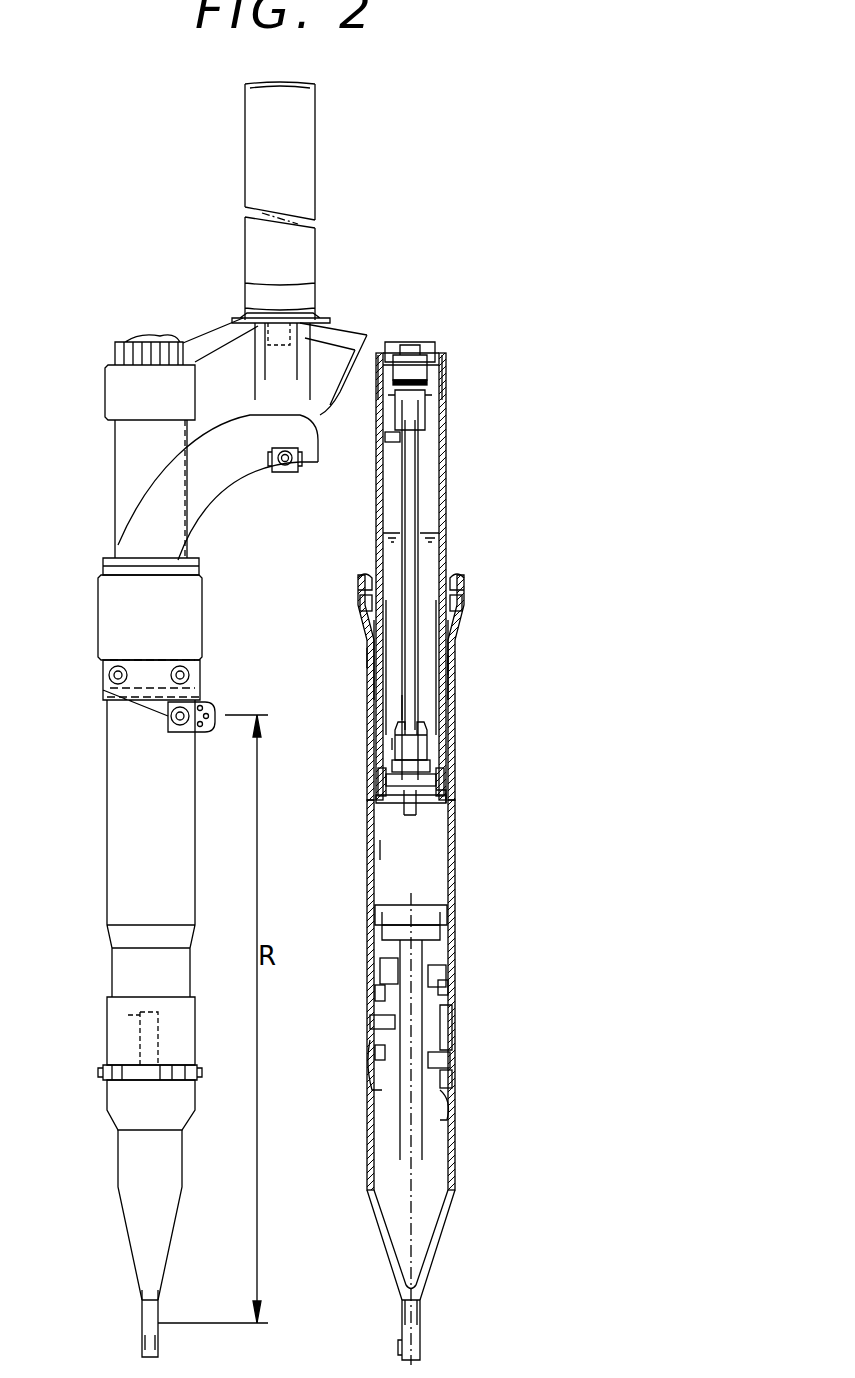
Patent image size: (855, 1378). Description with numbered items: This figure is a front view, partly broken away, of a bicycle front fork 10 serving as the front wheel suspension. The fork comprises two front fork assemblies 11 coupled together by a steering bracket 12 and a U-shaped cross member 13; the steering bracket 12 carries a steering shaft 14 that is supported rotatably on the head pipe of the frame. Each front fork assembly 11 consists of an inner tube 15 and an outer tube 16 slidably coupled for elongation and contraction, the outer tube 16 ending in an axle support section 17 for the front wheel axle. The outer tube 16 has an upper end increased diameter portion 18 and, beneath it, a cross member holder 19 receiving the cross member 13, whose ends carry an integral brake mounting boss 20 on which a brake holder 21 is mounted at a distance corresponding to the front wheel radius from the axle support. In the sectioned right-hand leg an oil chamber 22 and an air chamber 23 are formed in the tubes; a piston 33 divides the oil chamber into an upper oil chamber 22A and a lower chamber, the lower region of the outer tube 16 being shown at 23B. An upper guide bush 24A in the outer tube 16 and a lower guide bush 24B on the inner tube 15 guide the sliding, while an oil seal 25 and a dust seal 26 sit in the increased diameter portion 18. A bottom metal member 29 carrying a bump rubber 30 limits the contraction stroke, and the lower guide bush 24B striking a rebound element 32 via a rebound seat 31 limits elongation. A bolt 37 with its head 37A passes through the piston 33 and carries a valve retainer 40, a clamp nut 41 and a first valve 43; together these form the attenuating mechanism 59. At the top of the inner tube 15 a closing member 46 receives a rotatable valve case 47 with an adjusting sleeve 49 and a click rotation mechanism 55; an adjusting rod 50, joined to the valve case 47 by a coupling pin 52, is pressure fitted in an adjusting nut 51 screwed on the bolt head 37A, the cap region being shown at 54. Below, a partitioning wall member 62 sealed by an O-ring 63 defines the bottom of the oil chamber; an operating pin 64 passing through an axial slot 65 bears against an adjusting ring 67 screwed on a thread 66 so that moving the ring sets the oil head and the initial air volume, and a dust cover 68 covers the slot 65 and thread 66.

The front fork 10 is at (462, 257).
The front fork assembly 11 is at (117, 470).
The steering bracket 12 is at (198, 343).
The cross member 13 is at (262, 470).
The steering shaft 14 is at (310, 150).
The inner tube 15 is at (120, 508).
The outer tube 16 is at (107, 843).
The axle support section 17 is at (158, 1316).
The increased diameter portion 18 is at (100, 603).
The cross member holder 19 is at (110, 690).
The brake mounting boss 20 is at (178, 735).
The brake holder 21 is at (198, 693).
The oil chamber 22 is at (420, 712).
The upper oil chamber 22A is at (388, 687).
The air chamber 23 is at (430, 478).
The lower chamber 23B is at (378, 853).
The upper guide bush 24A is at (452, 638).
The lower guide bush 24B is at (378, 782).
The oil seal 25 is at (462, 600).
The dust seal 26 is at (462, 576).
The bottom metal member 29 is at (380, 942).
The bump rubber 30 is at (375, 915).
The rebound seat 31 is at (445, 665).
The rebound element 32 is at (370, 655).
The piston 33 is at (435, 780).
The bolt 37 is at (417, 815).
The head of bolt 37A is at (432, 736).
The valve retainer 40 is at (372, 805).
The clamp nut 41 is at (444, 798).
The first valve 43 is at (432, 757).
The closing member 46 is at (438, 410).
The valve case 47 is at (393, 438).
The adjusting sleeve 49 is at (445, 356).
The adjusting rod 50 is at (398, 548).
The adjusting nut 51 is at (395, 735).
The coupling pin 52 is at (445, 465).
The plug 54 is at (412, 342).
The click rotation mechanism 55 is at (443, 383).
The attenuating mechanism 59 is at (462, 745).
The partitioning wall member 62 is at (380, 975).
The O-ring 63 is at (448, 987).
The operating pin 64 is at (122, 1018).
The slot 65 is at (108, 1068).
The thread 66 is at (190, 1066).
The adjusting ring 67 is at (188, 1082).
The dust cover 68 is at (190, 1010).